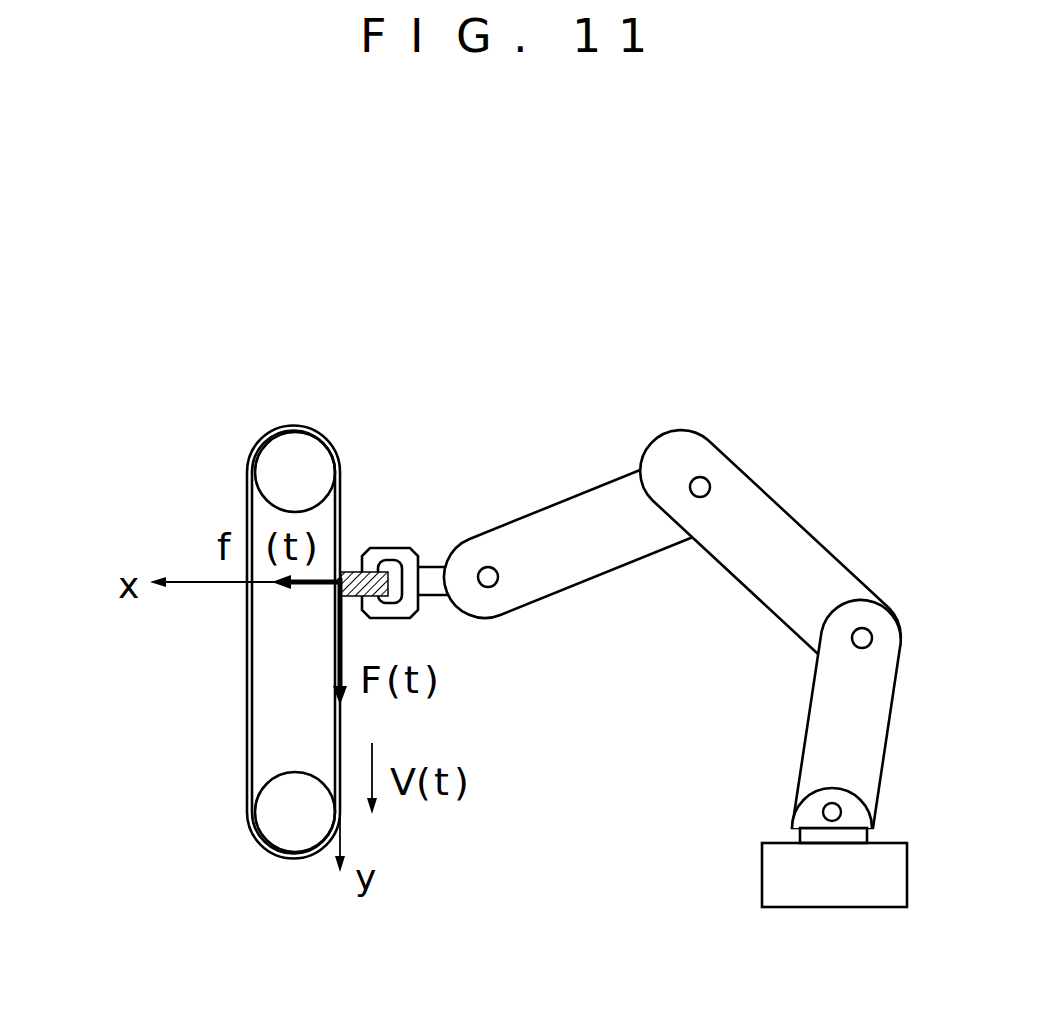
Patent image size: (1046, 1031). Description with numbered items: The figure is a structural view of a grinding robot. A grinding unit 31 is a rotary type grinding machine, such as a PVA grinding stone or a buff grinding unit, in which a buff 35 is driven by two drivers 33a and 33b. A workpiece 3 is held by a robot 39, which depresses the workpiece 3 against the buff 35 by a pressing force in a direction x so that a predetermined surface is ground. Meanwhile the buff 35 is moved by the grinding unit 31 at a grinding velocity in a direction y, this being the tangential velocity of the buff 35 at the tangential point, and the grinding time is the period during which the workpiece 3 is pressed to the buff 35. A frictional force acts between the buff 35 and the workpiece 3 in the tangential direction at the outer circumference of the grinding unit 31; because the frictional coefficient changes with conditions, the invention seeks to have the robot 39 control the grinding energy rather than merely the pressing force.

The grinding unit 31 is at (196, 612).
The driver 33a is at (273, 828).
The driver 33b is at (272, 458).
The buff 35 is at (247, 512).
The workpiece 3 is at (355, 558).
The robot 39 is at (584, 495).